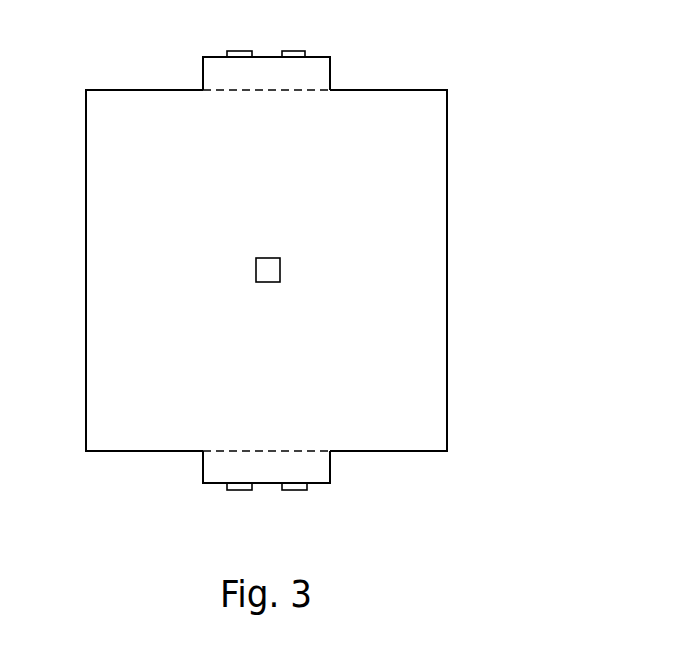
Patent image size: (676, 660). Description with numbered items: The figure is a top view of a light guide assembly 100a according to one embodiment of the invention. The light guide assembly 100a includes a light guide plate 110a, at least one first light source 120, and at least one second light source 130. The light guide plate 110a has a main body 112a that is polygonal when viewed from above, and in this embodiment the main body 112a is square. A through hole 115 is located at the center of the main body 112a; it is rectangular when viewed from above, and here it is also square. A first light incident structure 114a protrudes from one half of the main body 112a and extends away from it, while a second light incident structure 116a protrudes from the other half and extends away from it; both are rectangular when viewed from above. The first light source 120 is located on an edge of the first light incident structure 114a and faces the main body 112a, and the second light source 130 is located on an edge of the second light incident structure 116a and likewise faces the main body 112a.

The light guide assembly 100a is at (538, 42).
The light guide plate 110a is at (560, 188).
The main body 112a is at (442, 258).
The first light incident structure 114a is at (308, 465).
The second light incident structure 116a is at (308, 77).
The through hole 115 is at (254, 262).
The first light source 120 is at (237, 487).
The second light source 130 is at (237, 53).